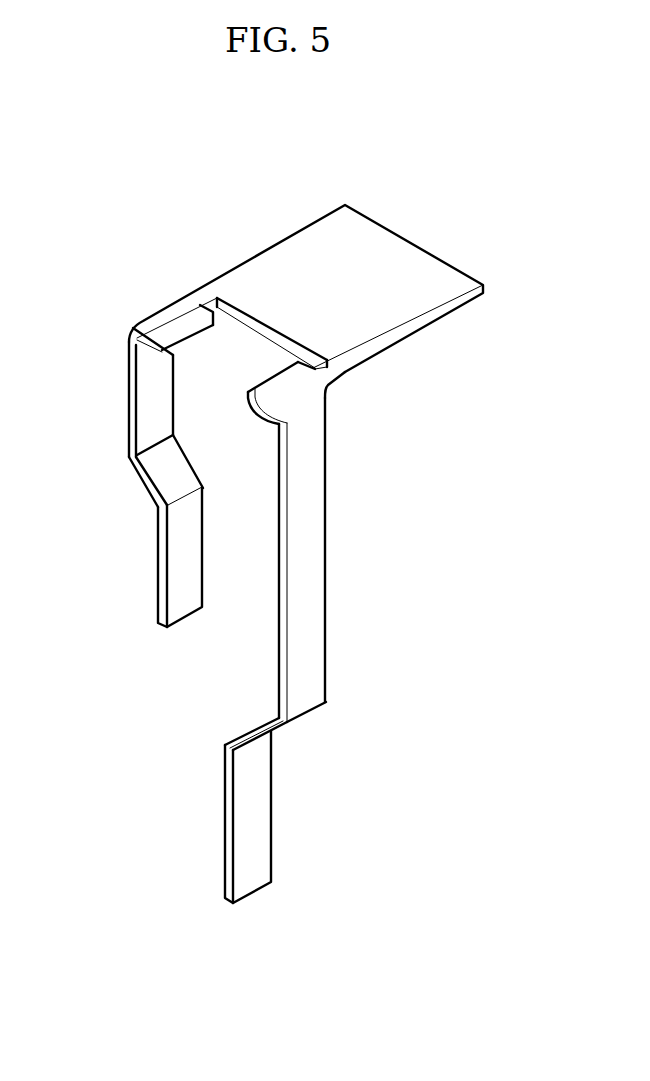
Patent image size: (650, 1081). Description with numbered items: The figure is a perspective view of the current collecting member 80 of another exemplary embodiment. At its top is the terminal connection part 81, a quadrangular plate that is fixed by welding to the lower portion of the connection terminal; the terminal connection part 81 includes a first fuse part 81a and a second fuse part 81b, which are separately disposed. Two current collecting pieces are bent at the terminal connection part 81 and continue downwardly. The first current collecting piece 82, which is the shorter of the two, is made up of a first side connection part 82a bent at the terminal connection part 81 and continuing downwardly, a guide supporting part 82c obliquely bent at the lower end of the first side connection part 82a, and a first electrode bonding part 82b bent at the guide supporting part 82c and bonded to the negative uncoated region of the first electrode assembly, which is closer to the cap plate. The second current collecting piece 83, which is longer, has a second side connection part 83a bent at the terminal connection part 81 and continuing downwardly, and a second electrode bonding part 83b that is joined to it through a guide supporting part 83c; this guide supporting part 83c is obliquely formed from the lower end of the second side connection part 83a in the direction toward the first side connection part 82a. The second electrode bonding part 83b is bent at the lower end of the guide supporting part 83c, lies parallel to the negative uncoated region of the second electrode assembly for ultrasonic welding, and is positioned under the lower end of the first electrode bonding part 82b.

The current collecting member 80 is at (258, 248).
The terminal connection part 81 is at (395, 255).
The first fuse part 81a is at (203, 297).
The second fuse part 81b is at (328, 366).
The first current collecting piece 82 is at (128, 374).
The first side connection part 82a is at (155, 405).
The first electrode bonding part 82b is at (183, 548).
The guide supporting part 82c is at (160, 470).
The second current collecting piece 83 is at (327, 516).
The second side connection part 83a is at (310, 605).
The second electrode bonding part 83b is at (253, 838).
The guide supporting part 83c is at (262, 722).